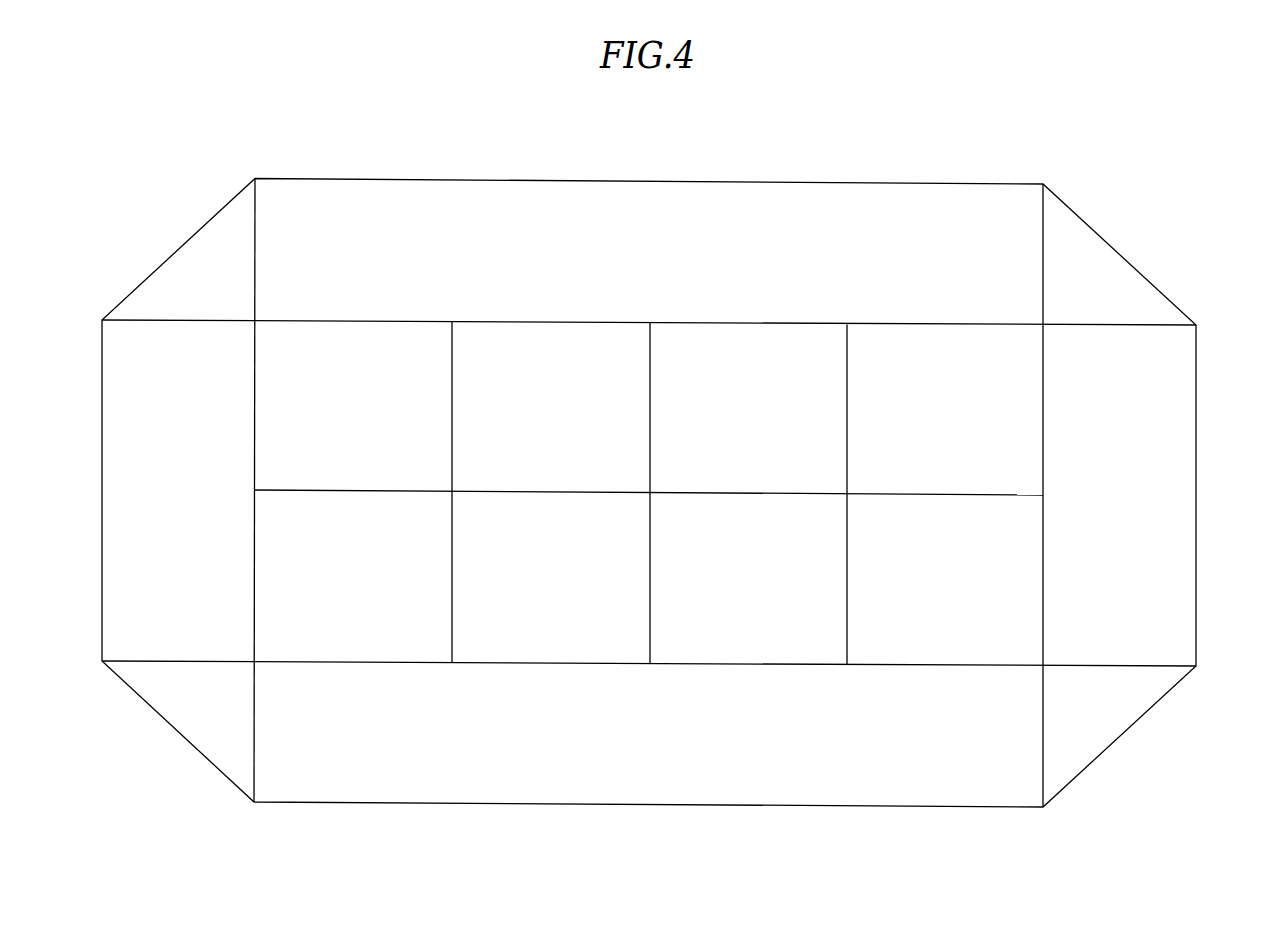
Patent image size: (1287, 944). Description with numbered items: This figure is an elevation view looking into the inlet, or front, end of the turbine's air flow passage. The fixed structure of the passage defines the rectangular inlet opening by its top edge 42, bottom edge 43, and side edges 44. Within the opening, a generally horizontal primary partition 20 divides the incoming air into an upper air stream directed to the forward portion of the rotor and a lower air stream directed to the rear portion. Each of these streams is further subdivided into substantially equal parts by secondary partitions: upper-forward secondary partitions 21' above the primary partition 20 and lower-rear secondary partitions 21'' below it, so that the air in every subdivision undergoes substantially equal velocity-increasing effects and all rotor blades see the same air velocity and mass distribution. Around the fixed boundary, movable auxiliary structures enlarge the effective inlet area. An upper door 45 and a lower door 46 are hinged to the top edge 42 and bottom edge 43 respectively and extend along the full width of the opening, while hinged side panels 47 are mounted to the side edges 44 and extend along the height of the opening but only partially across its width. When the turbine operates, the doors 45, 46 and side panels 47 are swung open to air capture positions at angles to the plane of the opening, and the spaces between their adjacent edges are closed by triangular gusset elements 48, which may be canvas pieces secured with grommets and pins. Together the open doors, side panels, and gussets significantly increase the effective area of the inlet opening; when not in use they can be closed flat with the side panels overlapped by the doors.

The primary partition 20 is at (695, 493).
The upper-forward secondary partitions 21' is at (747, 493).
The lower-rear secondary partitions 21'' is at (747, 577).
The top edge 42 is at (582, 323).
The bottom edge 43 is at (739, 664).
The side edges 44 is at (255, 404).
The upper door 45 is at (652, 207).
The lower door 46 is at (677, 785).
The side panels 47 is at (130, 503).
The gusset elements 48 is at (190, 268).